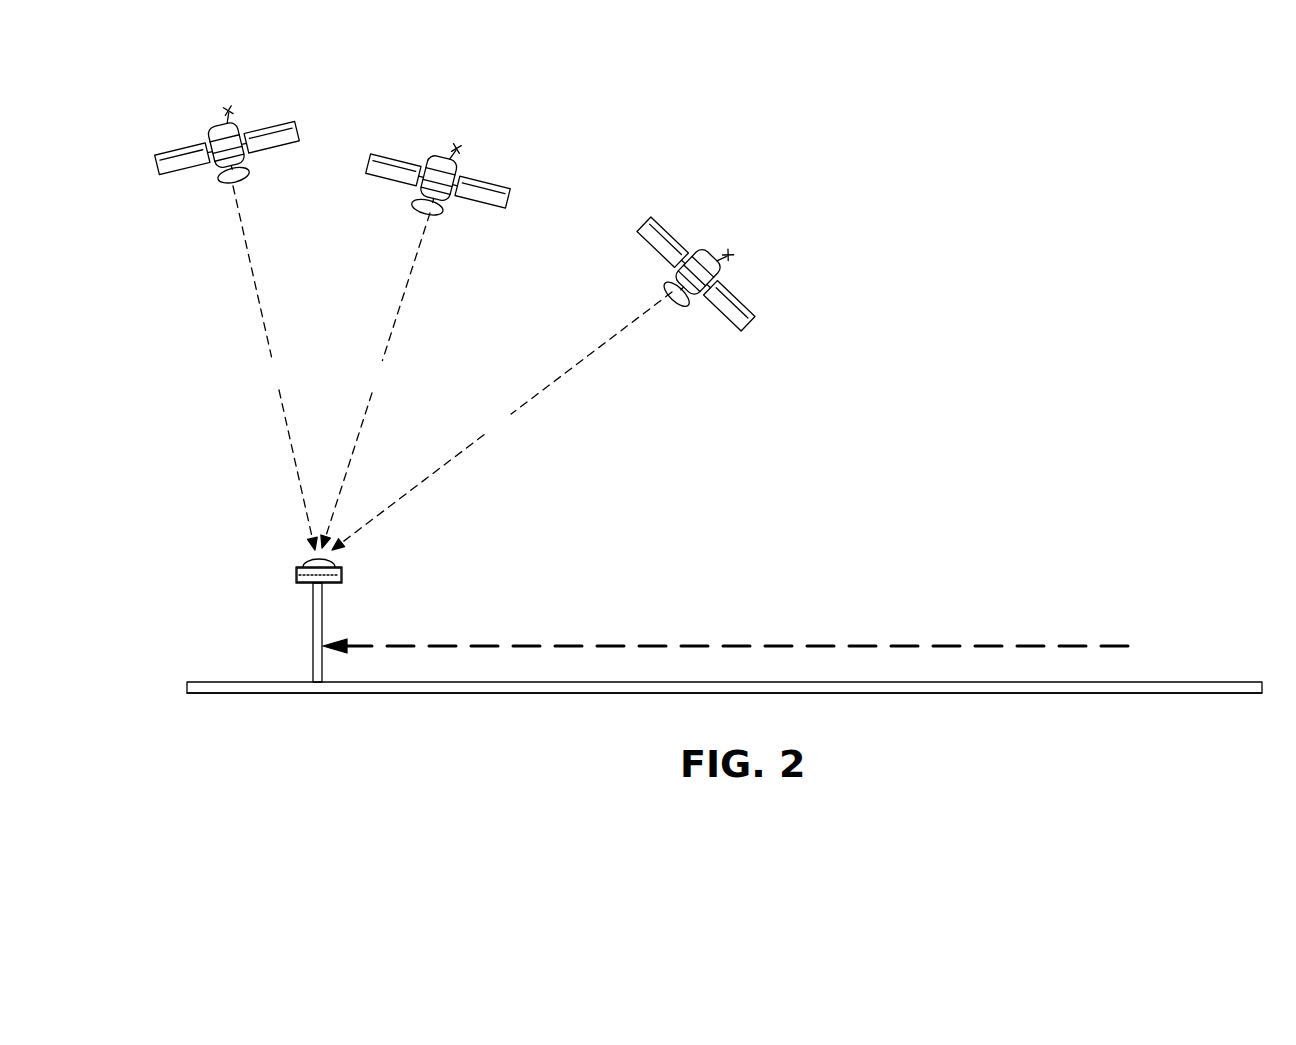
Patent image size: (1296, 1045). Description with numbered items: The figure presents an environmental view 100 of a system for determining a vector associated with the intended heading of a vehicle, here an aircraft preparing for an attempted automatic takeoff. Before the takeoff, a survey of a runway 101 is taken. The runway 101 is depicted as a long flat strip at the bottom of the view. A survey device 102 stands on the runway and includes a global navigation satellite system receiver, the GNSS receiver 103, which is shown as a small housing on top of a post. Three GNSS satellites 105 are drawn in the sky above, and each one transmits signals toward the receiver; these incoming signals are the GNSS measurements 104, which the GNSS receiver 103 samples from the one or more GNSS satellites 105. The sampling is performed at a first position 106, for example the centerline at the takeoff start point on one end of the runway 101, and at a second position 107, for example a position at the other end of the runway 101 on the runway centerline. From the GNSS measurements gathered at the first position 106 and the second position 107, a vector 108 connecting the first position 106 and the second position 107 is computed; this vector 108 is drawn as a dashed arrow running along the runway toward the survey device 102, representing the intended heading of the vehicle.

The environmental view 100 is at (1118, 142).
The runway 101 is at (973, 687).
The survey device 102 is at (270, 580).
The GNSS receiver 103 is at (343, 576).
The GNSS measurements 104 is at (452, 368).
The GNSS satellites 105 is at (283, 140).
The first position 106 is at (1146, 705).
The second position 107 is at (316, 712).
The vector 108 is at (717, 645).